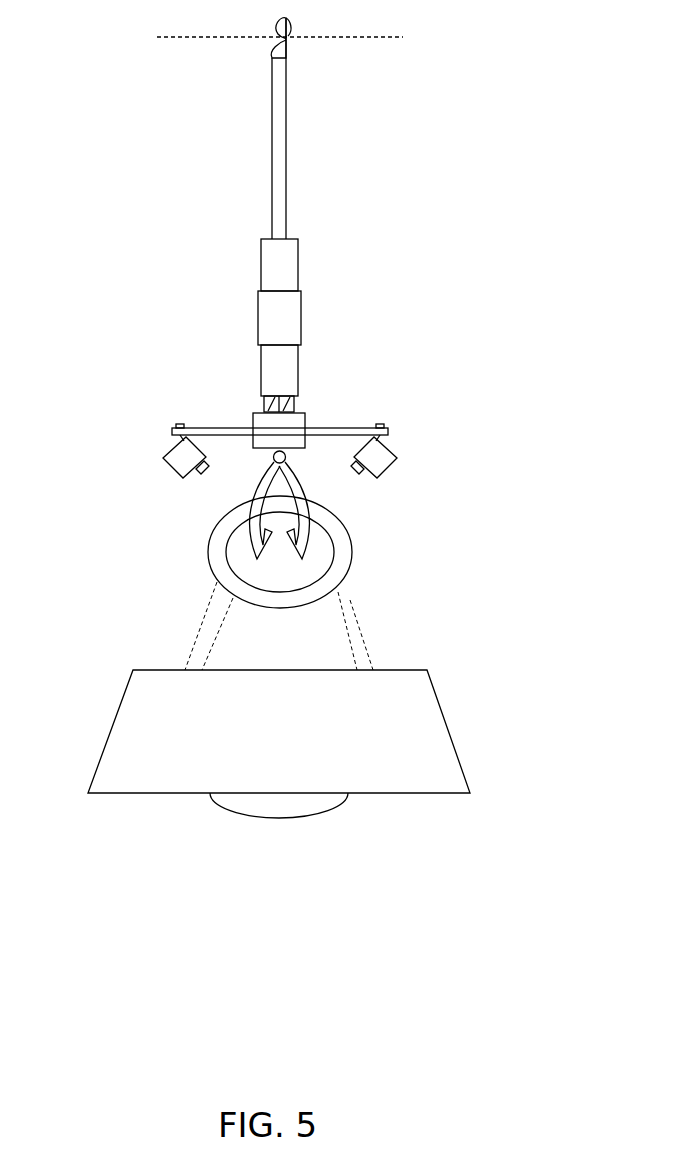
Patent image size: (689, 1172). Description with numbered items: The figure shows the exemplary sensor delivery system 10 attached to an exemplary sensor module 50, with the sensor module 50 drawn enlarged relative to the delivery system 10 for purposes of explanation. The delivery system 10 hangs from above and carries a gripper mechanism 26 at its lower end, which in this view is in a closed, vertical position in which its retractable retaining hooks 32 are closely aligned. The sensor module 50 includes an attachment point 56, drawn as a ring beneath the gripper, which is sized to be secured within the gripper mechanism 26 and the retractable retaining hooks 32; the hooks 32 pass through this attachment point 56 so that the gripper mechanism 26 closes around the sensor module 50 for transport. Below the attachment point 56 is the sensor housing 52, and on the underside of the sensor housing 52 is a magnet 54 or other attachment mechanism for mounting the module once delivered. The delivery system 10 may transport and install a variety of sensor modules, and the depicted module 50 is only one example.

The sensor delivery system 10 is at (208, 325).
The gripper mechanism 26 is at (306, 485).
The retractable retaining hooks 32 is at (253, 553).
The sensor module 50 is at (338, 751).
The sensor housing 52 is at (387, 795).
The magnet 54 is at (317, 815).
The attachment point 56 is at (223, 573).